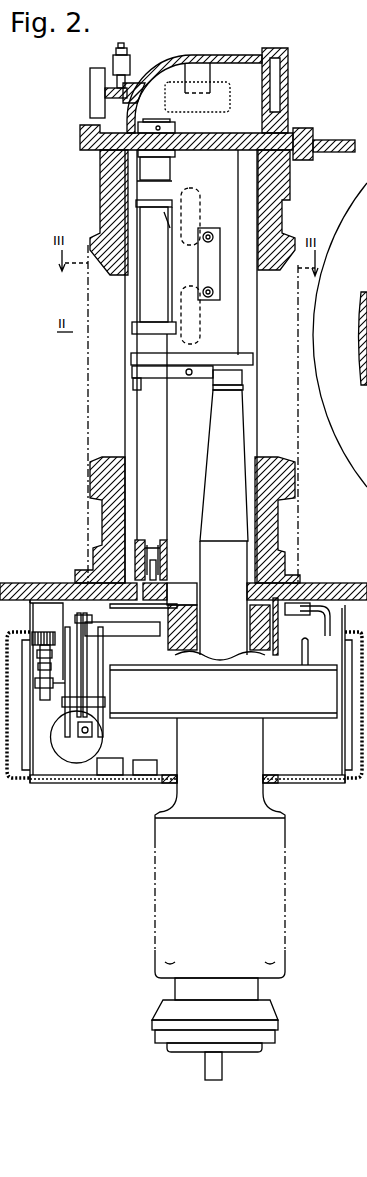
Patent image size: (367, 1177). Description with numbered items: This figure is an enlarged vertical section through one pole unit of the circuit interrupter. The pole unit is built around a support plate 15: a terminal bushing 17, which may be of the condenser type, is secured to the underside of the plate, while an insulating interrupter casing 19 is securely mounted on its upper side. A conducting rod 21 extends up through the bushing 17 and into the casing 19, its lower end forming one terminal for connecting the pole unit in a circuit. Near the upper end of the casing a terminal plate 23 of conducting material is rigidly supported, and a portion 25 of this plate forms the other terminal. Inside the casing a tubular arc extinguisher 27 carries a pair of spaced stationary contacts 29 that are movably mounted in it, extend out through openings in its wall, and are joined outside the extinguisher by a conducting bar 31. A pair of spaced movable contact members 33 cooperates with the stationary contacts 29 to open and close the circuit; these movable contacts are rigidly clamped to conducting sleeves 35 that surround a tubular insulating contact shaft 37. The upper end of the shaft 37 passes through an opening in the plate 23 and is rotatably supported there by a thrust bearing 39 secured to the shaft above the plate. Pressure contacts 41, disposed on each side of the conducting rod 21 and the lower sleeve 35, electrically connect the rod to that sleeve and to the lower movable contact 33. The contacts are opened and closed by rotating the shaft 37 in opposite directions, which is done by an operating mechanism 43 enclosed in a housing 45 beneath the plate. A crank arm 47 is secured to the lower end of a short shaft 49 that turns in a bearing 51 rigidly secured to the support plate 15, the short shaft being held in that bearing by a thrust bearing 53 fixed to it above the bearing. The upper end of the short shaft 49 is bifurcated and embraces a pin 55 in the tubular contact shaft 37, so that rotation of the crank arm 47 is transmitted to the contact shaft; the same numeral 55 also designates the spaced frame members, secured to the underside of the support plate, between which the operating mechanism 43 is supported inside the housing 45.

The support plate 15 is at (352, 592).
The terminal bushing 17 is at (278, 813).
The insulating interrupter casing 19 is at (276, 531).
The conducting rod 21 is at (242, 383).
The terminal plate 23 is at (239, 120).
The portion of terminal plate 25 is at (330, 138).
The tubular arc extinguisher 27 is at (236, 321).
The stationary contacts 29 is at (206, 228).
The conducting bar 31 is at (198, 257).
The movable contact members 33 is at (196, 196).
The conducting sleeves 35 is at (168, 212).
The tubular insulating contact shaft 37 is at (162, 450).
The thrust bearing 39 is at (175, 129).
The pressure contacts 41 is at (204, 381).
The operating mechanism 43 is at (182, 705).
The housing 45 is at (100, 780).
The crank arm 47 is at (146, 637).
The short shaft 49 is at (168, 556).
The bearing 51 is at (197, 594).
The thrust bearing 53 is at (166, 578).
The pin 55 is at (157, 558).